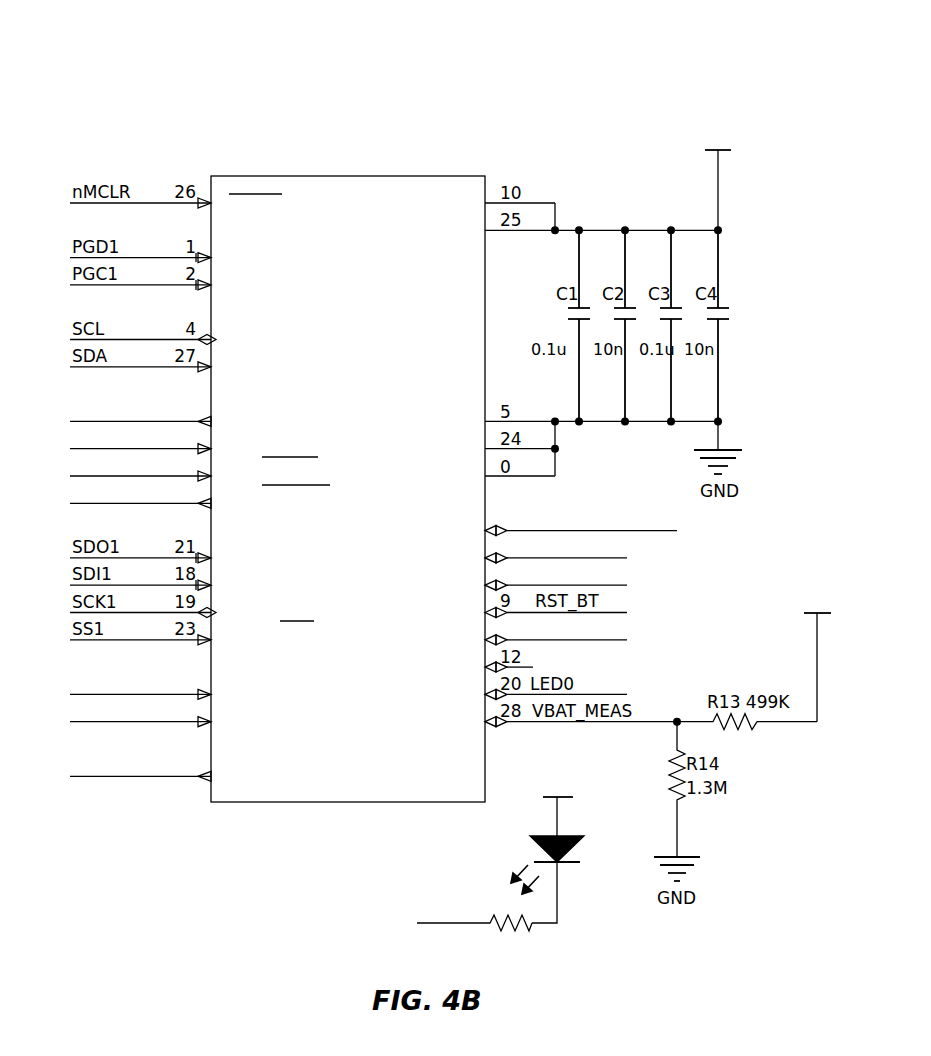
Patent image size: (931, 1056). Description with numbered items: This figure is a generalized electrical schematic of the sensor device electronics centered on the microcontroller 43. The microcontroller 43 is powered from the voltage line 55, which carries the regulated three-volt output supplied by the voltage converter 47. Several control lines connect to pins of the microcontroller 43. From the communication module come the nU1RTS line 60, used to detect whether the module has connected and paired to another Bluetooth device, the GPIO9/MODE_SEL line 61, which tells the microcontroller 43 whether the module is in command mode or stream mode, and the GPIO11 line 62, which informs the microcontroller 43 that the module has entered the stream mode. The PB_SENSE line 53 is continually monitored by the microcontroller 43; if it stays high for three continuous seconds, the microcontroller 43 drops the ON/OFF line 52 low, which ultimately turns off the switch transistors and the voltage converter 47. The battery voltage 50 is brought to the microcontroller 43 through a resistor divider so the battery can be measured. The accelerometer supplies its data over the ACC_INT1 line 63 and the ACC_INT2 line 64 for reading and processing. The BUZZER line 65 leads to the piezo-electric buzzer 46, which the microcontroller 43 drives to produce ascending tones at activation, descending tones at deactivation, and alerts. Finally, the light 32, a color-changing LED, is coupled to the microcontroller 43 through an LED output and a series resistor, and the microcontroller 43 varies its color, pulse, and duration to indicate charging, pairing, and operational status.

The microcontroller 43 is at (250, 173).
The voltage line 55 is at (746, 140).
The nU1RTS line 60 is at (88, 506).
The GPIO9/MODE_SEL line 61 is at (664, 532).
The GPIO11 line 62 is at (623, 559).
The PB_SENSE line 53 is at (620, 587).
The ON/OFF line 52 is at (620, 642).
The battery voltage 50 is at (804, 608).
The ACC_INT1 line 63 is at (76, 697).
The ACC_INT2 line 64 is at (84, 724).
The BUZZER line 65 is at (88, 778).
The buzzer 46 is at (140, 767).
The light 32 is at (592, 910).
The voltage converter 47 is at (474, 929).